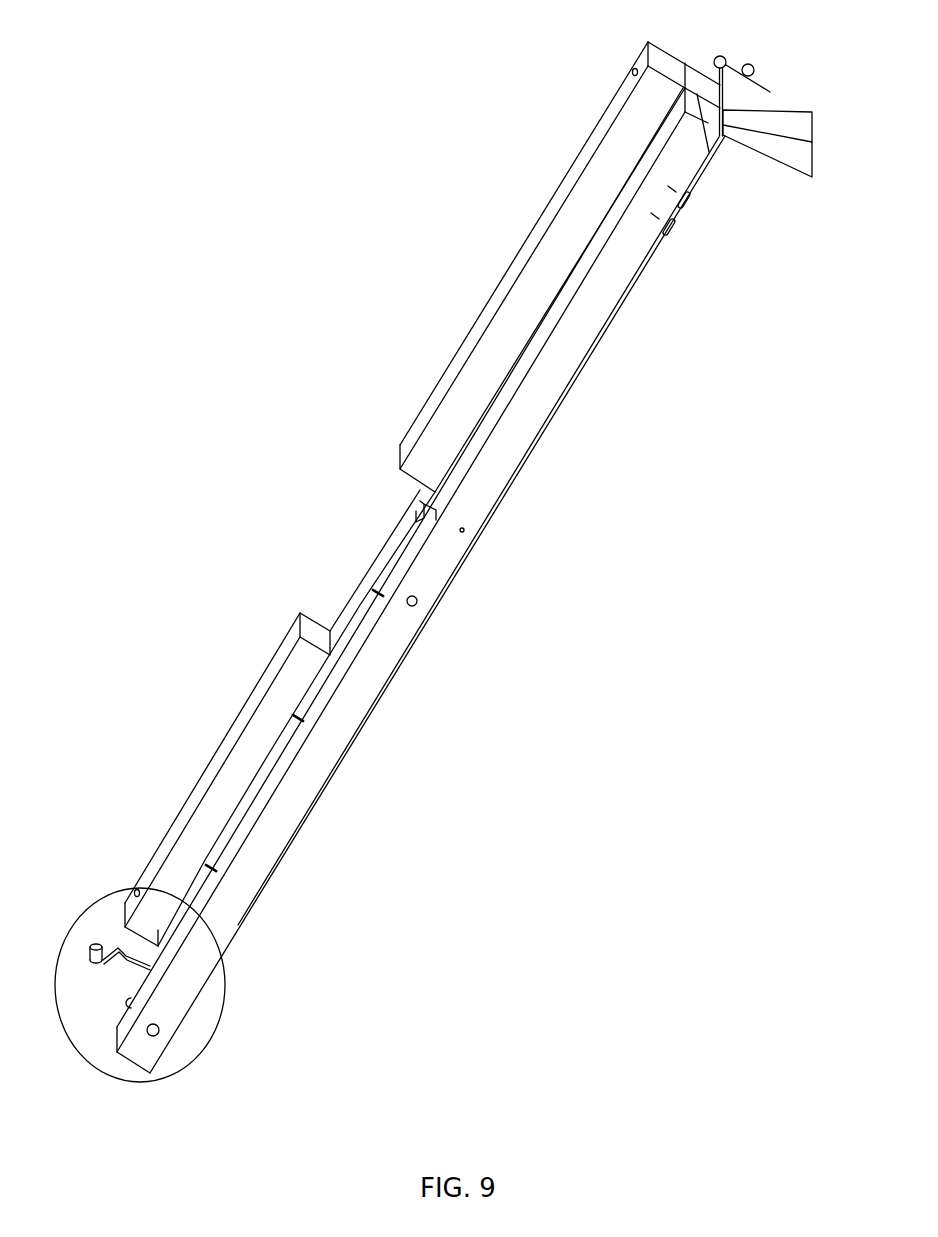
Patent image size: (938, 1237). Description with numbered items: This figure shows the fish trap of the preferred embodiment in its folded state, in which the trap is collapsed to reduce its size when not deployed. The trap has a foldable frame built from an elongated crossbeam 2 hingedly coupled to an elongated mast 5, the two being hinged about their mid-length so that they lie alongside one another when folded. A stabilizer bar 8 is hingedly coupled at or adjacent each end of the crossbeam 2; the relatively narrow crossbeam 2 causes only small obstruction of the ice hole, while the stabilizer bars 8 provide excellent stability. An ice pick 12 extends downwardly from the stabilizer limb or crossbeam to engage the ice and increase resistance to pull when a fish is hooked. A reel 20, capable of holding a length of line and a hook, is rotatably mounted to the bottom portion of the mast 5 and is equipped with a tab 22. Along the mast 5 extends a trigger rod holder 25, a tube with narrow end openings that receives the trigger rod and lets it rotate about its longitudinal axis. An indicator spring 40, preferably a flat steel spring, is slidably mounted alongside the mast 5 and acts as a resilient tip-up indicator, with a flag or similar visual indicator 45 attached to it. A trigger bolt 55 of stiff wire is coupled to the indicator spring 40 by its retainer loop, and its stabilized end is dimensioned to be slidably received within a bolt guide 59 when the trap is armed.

The crossbeam 2 is at (697, 71).
The mast 5 is at (262, 857).
The stabilizer bar 8 is at (501, 280).
The ice pick 12 is at (632, 71).
The reel 20 is at (224, 1012).
The tab 22 is at (90, 950).
The trigger rod holder 25 is at (403, 545).
The indicator spring 40 is at (421, 638).
The visual indicator 45 is at (813, 165).
The trigger bolt 55 is at (769, 88).
The bolt guide 59 is at (438, 512).